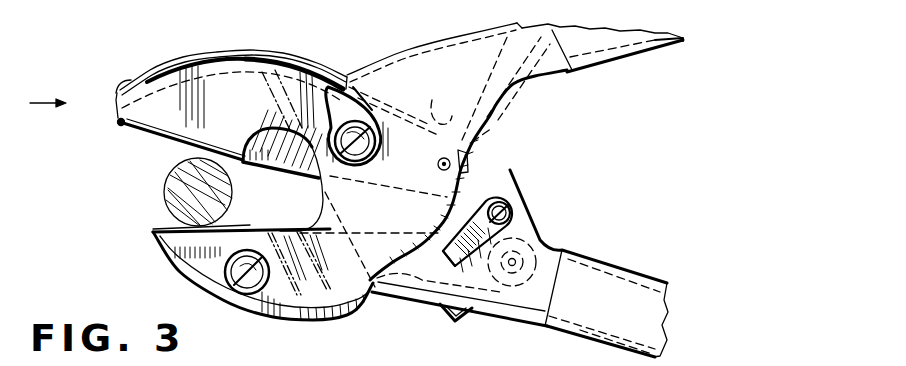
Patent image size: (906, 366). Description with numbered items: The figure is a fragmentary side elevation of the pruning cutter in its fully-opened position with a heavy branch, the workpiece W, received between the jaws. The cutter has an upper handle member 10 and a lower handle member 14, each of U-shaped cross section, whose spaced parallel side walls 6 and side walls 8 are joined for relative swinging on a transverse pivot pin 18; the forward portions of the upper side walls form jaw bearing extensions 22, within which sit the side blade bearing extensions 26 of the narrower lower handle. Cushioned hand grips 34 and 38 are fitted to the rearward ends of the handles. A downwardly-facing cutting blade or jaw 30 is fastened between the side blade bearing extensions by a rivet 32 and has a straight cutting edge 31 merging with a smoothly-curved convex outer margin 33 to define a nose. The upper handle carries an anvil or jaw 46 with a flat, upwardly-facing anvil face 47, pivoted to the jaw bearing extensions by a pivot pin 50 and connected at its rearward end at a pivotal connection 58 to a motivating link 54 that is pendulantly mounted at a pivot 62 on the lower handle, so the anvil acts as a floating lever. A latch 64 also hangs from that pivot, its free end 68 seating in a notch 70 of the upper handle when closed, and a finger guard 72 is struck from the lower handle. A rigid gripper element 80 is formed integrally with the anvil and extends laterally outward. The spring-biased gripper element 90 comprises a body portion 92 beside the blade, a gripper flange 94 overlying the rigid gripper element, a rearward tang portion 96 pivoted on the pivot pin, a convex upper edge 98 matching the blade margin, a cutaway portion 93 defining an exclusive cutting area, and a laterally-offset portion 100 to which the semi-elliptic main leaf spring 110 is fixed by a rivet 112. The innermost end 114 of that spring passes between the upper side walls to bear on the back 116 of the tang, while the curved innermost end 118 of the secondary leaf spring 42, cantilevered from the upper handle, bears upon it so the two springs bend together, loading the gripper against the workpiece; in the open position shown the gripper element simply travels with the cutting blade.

The side walls or flanges 6 is at (410, 53).
The side walls or flanges 8 is at (512, 304).
The upper handle member 10 is at (655, 48).
The lower handle member 14 is at (585, 333).
The pivot pin 18 is at (377, 160).
The jaw bearing extensions 22 is at (278, 293).
The side blade bearing extensions 26 is at (361, 258).
The cutting blade or jaw 30 is at (270, 145).
The cutting edge 31 is at (283, 181).
The rivet 32 is at (439, 172).
The outer margin 33 is at (247, 60).
The hand grip 34 is at (597, 50).
The hand grip 38 is at (632, 280).
The leaf spring 42 is at (545, 42).
The anvil or jaw 46 is at (325, 308).
The anvil face 47 is at (250, 222).
The pivot pin 50 is at (232, 275).
The motivating link 54 is at (531, 222).
The pivotal connection 58 is at (521, 257).
The pivot 62 is at (503, 208).
The latch 64 is at (470, 268).
The free end 68 is at (446, 259).
The notch 70 is at (462, 170).
The finger guard 72 is at (452, 317).
The rigid gripper element 80 is at (166, 238).
The spring-biased gripper element 90 is at (48, 91).
The body portion 92 is at (227, 97).
The cutaway portion 93 is at (288, 140).
The gripper flange 94 is at (222, 148).
The tang portion 96 is at (383, 142).
The upper edge 98 is at (281, 58).
The laterally-offset portion 100 is at (147, 80).
The leaf spring 110 is at (200, 55).
The rivet 112 is at (118, 86).
The innermost end 114 is at (399, 106).
The back 116 is at (479, 148).
The curved innermost end 118 is at (435, 108).
The workpiece W is at (165, 182).